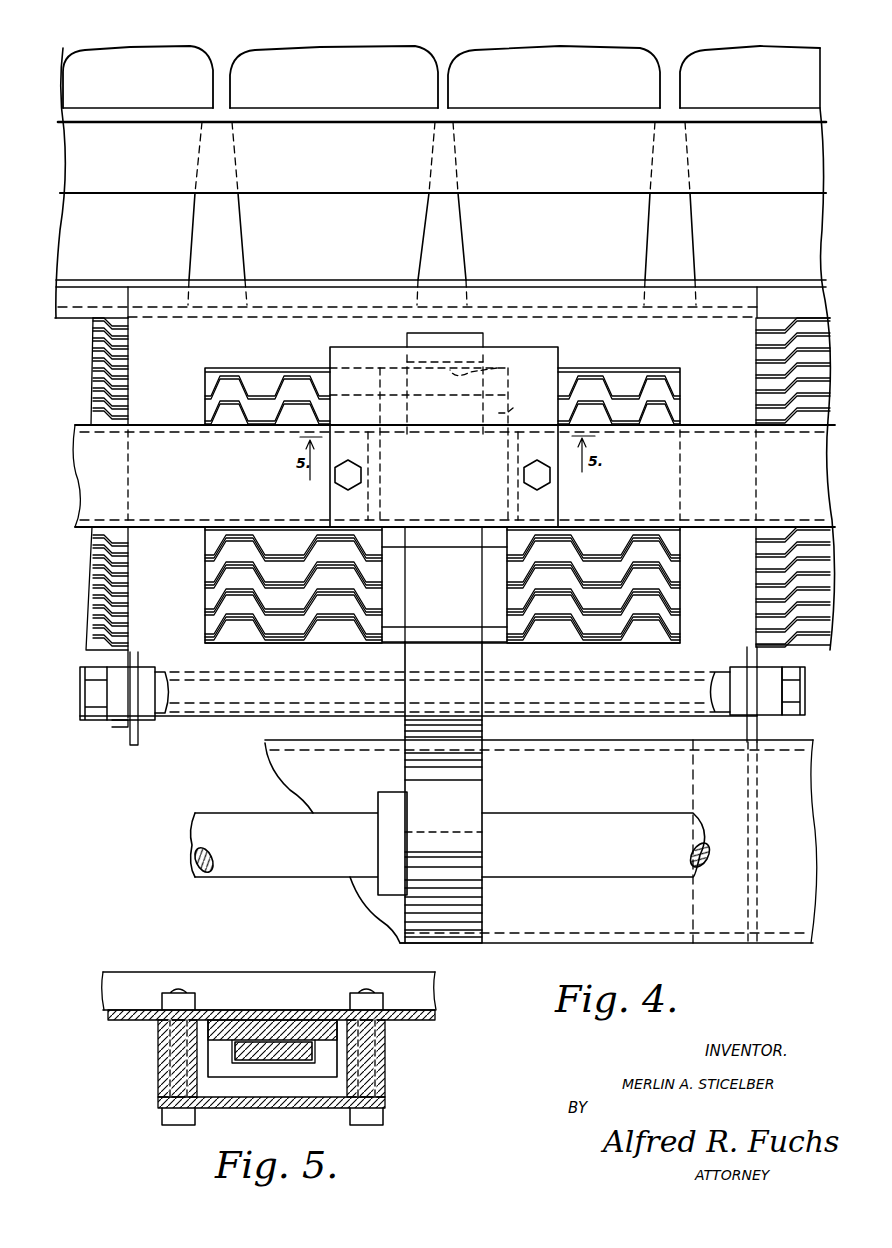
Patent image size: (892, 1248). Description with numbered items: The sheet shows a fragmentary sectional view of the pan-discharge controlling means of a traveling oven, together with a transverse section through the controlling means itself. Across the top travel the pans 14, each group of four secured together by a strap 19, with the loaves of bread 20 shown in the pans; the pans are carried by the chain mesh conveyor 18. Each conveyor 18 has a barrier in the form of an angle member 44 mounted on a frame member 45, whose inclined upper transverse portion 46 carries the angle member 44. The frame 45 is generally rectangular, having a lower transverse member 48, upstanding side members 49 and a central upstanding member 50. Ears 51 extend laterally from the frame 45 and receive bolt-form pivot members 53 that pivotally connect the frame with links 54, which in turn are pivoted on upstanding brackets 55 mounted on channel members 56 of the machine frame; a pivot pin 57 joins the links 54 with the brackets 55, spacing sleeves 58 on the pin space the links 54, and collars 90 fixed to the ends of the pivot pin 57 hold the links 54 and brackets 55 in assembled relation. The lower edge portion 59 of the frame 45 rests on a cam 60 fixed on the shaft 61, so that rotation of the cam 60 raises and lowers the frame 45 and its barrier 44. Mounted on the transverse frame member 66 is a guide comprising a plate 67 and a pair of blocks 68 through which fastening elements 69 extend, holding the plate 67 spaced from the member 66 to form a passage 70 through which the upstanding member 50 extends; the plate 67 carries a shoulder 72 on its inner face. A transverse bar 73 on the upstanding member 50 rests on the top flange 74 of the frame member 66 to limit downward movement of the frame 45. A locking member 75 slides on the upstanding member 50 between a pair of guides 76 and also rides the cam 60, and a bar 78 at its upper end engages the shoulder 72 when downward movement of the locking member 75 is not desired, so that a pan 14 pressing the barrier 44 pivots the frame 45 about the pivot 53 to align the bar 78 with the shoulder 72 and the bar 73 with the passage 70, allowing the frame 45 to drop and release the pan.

In FIG. 4, the pan 14 is at (172, 233).
In FIG. 4, the conveyor 18 is at (118, 360).
In FIG. 4, the strap 19 is at (445, 166).
In FIG. 4, the loaves of bread 20 is at (228, 60).
In FIG. 4, the angle member 44 is at (432, 284).
In FIG. 4, the frame member 45 is at (119, 564).
In FIG. 4, the upper transverse portion 46 is at (255, 347).
In FIG. 4, the lower transverse member 48 is at (270, 657).
In FIG. 4, the upstanding side member 49 is at (718, 600).
In FIG. 4, the central upstanding member 50 is at (493, 598).
In FIG. 5, the central upstanding member 50 is at (280, 1027).
In FIG. 4, the ear 51 is at (147, 667).
In FIG. 4, the pivot member 53 is at (183, 687).
In FIG. 4, the link 54 is at (122, 720).
In FIG. 4, the upstanding bracket 55 is at (140, 733).
In FIG. 4, the channel member 56 is at (317, 778).
In FIG. 4, the pivot pin 57 is at (565, 692).
In FIG. 4, the spacing sleeve 58 is at (273, 710).
In FIG. 4, the lower edge portion 59 is at (583, 720).
In FIG. 4, the cam 60 is at (470, 805).
In FIG. 4, the shaft 61 is at (545, 830).
In FIG. 4, the transverse frame member 66 is at (653, 475).
In FIG. 5, the transverse frame member 66 is at (237, 1010).
In FIG. 4, the plate 67 is at (547, 357).
In FIG. 5, the plate 67 is at (290, 1105).
In FIG. 4, the block 68 is at (340, 453).
In FIG. 5, the block 68 is at (163, 1038).
In FIG. 5, the fastening element 69 is at (165, 1117).
In FIG. 4, the passage 70 is at (510, 507).
In FIG. 5, the passage 70 is at (240, 1085).
In FIG. 4, the shoulder 72 is at (525, 356).
In FIG. 4, the transverse bar 73 is at (513, 408).
In FIG. 4, the top flange 74 is at (700, 425).
In FIG. 4, the locking member 75 is at (433, 608).
In FIG. 5, the locking member 75 is at (297, 1050).
In FIG. 5, the guide 76 is at (222, 1068).
In FIG. 4, the bar 78 is at (497, 368).
In FIG. 4, the collar 90 is at (87, 722).